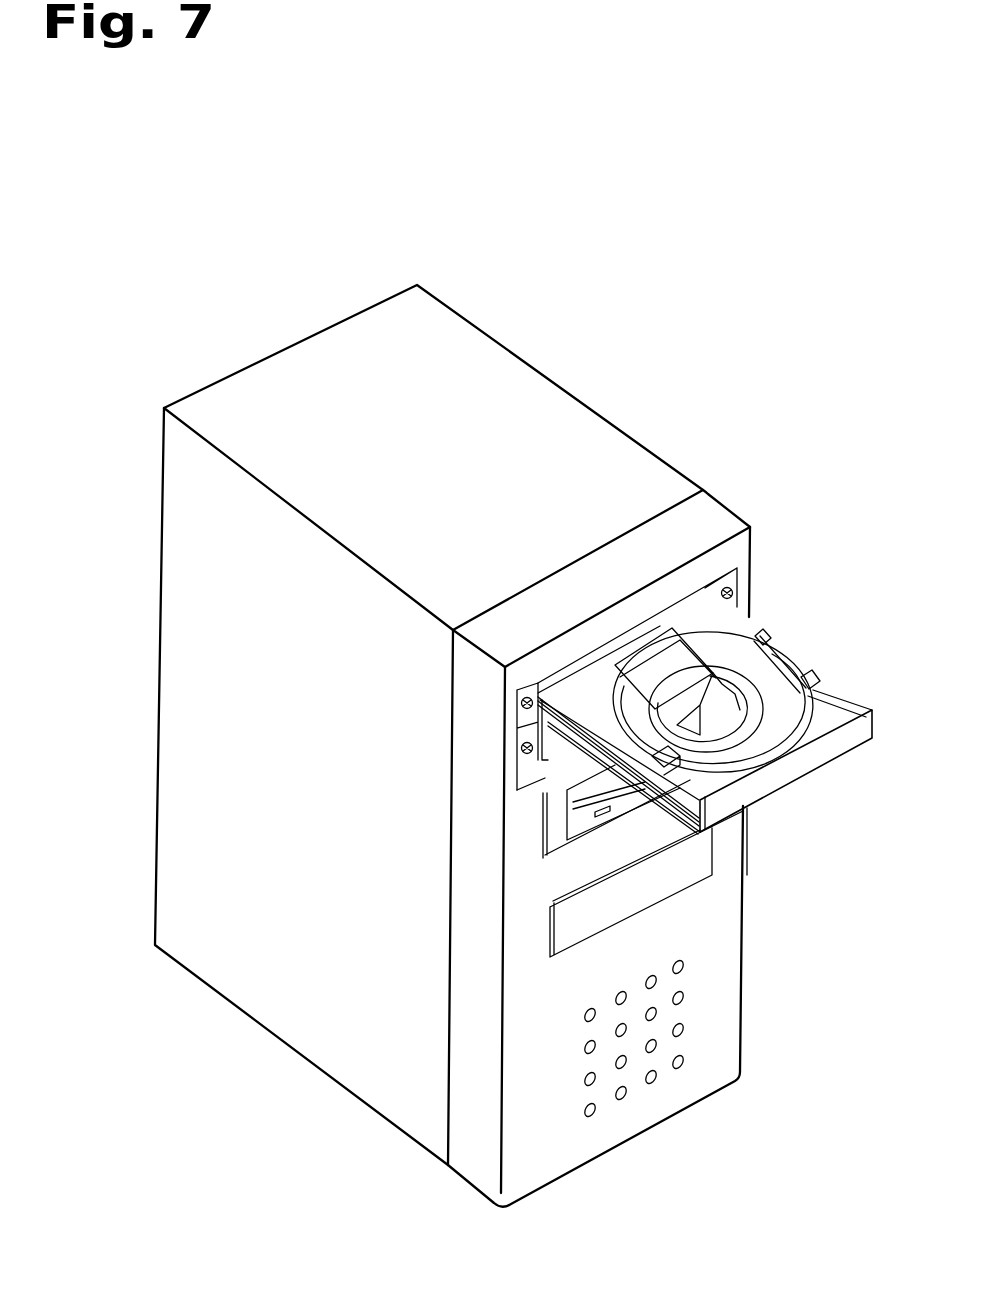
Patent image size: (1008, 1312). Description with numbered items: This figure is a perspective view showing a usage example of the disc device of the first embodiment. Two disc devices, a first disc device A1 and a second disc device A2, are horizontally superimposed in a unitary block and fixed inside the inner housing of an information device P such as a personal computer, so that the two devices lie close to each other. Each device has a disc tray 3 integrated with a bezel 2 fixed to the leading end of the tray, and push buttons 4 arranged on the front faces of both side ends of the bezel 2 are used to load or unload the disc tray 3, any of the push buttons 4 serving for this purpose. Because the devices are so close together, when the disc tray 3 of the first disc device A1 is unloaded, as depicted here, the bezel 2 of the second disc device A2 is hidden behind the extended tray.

The information device P is at (340, 1036).
The bezel 2 is at (793, 774).
The disc tray 3 is at (788, 695).
The push buttons 4 is at (520, 705).
The first disc device A1 is at (762, 627).
The second disc device A2 is at (543, 772).